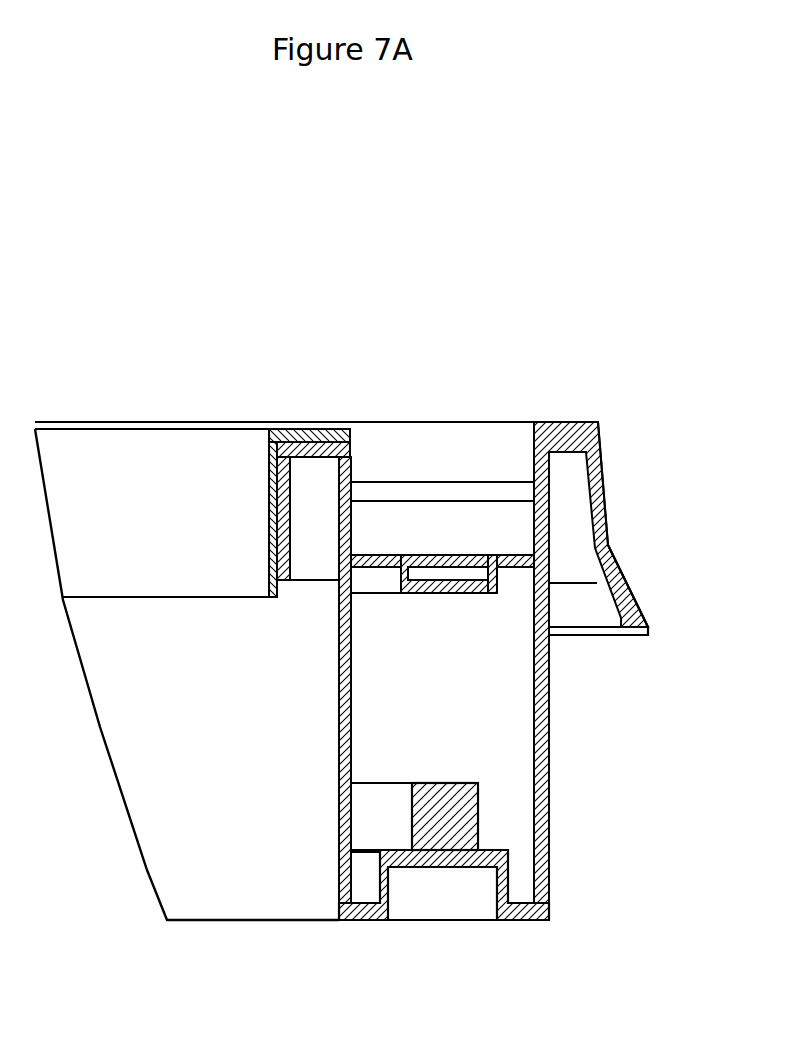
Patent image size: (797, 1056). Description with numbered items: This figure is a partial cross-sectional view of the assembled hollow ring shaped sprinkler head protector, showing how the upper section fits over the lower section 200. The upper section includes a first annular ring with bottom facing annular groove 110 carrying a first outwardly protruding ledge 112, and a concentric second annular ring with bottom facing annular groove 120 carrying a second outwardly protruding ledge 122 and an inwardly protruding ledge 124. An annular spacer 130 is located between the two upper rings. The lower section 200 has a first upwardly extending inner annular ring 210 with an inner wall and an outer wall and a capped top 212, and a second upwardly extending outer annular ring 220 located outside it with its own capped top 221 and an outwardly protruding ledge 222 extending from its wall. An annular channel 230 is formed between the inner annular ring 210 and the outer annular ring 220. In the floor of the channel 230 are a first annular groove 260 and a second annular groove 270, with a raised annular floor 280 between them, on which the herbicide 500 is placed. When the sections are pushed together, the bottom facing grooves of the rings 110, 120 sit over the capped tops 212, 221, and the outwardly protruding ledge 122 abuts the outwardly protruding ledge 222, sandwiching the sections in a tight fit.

The first annular ring with bottom facing annular groove 110 is at (310, 428).
The first outwardly protruding ledge 112 is at (380, 567).
The second annular ring with bottom facing annular groove 120 is at (598, 425).
The second outwardly protruding ledge 122 is at (625, 578).
The inwardly protruding ledge 124 is at (488, 593).
The annular spacer 130 is at (442, 576).
The lower section 200 is at (521, 722).
The first upwardly extending inner annular ring 210 is at (338, 692).
The capped top of annular ring 212 is at (306, 458).
The second upwardly extending outer annular ring 220 is at (550, 753).
The capped top of annular ring 221 is at (567, 455).
The outwardly protruding ledge 222 is at (611, 608).
The annular channel 230 is at (392, 738).
The first annular groove 260 is at (377, 920).
The second annular groove 270 is at (525, 920).
The raised annular floor 280 is at (443, 867).
The herbicide 500 is at (465, 832).